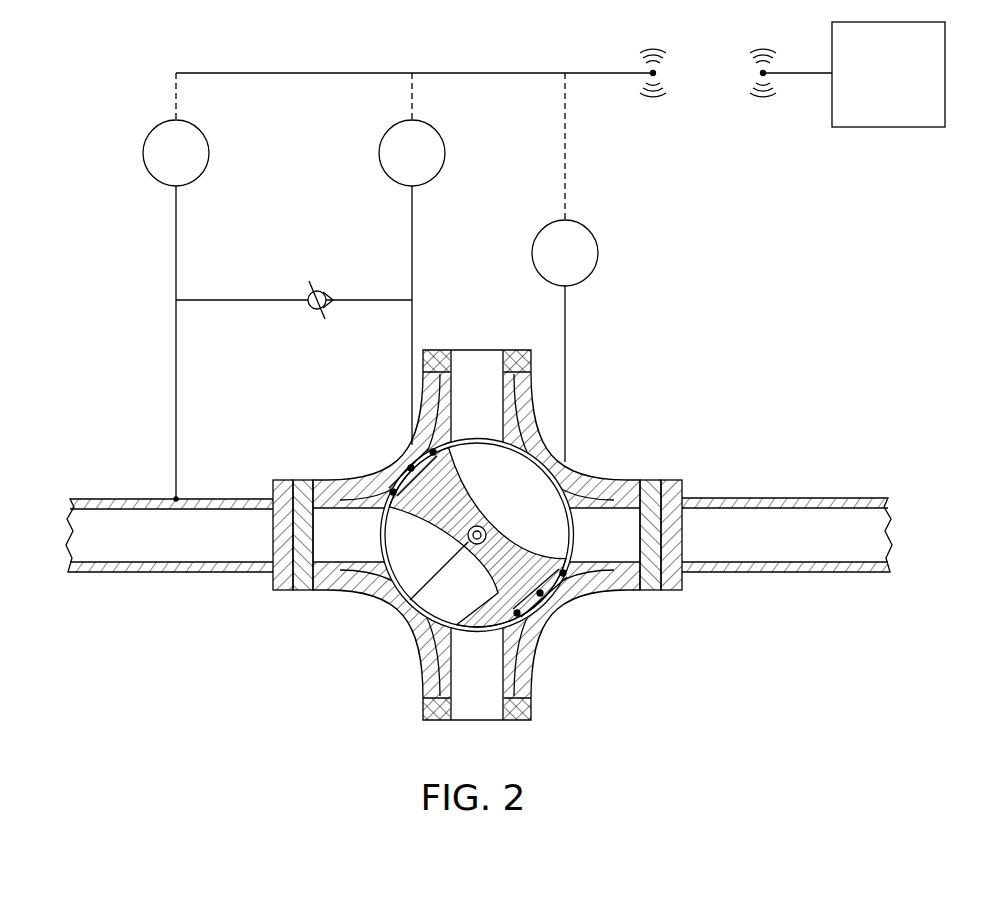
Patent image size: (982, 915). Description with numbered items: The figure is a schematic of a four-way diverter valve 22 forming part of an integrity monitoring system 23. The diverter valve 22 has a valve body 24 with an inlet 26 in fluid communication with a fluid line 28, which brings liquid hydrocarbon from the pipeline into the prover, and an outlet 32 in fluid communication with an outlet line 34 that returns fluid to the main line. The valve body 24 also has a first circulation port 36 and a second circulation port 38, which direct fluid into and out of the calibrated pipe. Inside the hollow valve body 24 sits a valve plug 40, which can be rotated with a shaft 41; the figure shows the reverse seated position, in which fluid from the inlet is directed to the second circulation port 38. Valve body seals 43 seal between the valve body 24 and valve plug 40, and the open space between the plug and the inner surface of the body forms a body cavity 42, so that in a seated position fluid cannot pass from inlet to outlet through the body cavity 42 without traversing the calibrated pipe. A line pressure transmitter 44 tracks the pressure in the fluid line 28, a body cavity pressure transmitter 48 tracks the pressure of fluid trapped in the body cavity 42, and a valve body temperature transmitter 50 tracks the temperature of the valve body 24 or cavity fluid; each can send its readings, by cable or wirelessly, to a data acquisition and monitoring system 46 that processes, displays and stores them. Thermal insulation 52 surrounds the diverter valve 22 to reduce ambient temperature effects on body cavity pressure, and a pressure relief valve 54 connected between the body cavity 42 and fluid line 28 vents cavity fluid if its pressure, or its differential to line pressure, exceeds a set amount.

The diverter valve 22 is at (386, 641).
The integrity monitoring system 23 is at (622, 340).
The valve body 24 is at (585, 472).
The inlet 26 is at (300, 478).
The fluid line 28 is at (122, 515).
The outlet 32 is at (657, 480).
The outlet line 34 is at (800, 548).
The first circulation port 36 is at (478, 357).
The second circulation port 38 is at (478, 708).
The valve plug 40 is at (522, 590).
The shaft 41 is at (393, 616).
The body cavity 42 is at (552, 600).
The valve body seals 43 is at (582, 592).
The line pressure transmitter 44 is at (145, 137).
The data acquisition and monitoring system 46 is at (888, 128).
The body cavity pressure transmitter 48 is at (388, 125).
The valve body temperature transmitter 50 is at (603, 222).
The thermal insulation 52 is at (392, 452).
The pressure relief valve 54 is at (317, 290).